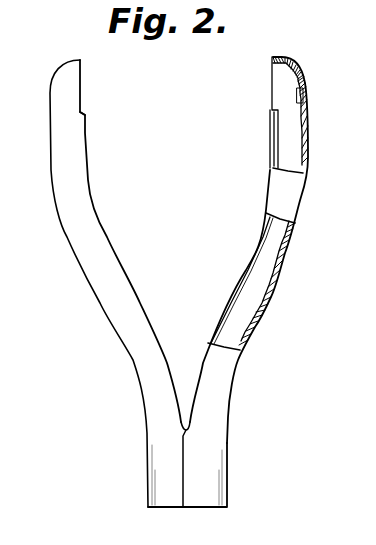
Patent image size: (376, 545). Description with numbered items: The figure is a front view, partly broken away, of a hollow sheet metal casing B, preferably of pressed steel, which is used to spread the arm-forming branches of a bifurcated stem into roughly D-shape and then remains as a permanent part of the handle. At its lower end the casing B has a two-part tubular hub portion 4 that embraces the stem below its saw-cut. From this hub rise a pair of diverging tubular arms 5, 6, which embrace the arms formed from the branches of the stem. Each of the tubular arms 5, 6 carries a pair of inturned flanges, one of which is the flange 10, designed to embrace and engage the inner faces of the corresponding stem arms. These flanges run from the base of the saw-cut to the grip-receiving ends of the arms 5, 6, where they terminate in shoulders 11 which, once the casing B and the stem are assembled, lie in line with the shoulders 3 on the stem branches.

The shoulders 3 is at (50, 203).
The two-part tubular hub portion 4 is at (135, 462).
The tubular arm 5 is at (108, 284).
The tubular arm 6 is at (245, 293).
The inturned flange 10 is at (260, 254).
The shoulders 11 is at (85, 112).
The casing B is at (138, 325).